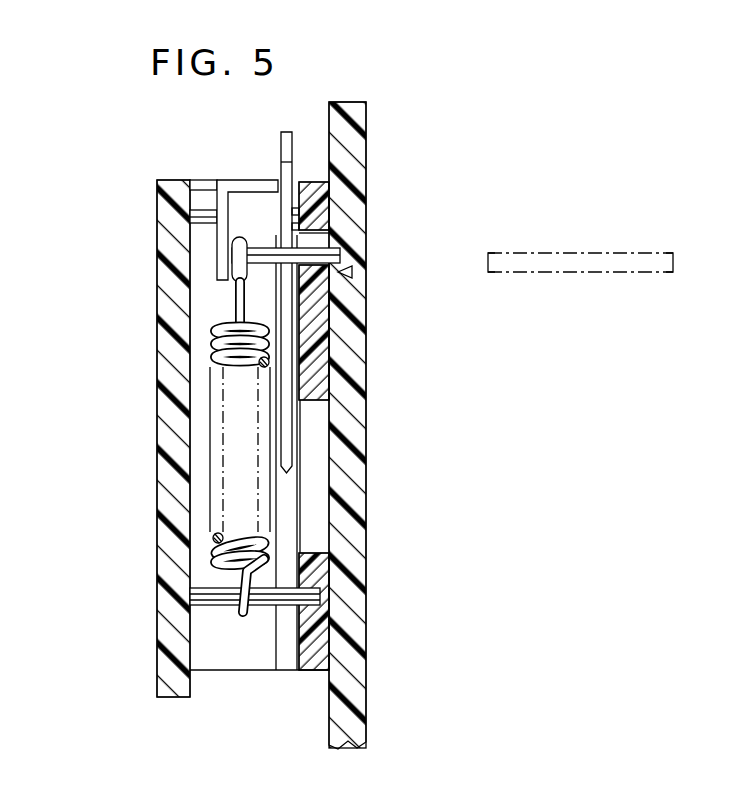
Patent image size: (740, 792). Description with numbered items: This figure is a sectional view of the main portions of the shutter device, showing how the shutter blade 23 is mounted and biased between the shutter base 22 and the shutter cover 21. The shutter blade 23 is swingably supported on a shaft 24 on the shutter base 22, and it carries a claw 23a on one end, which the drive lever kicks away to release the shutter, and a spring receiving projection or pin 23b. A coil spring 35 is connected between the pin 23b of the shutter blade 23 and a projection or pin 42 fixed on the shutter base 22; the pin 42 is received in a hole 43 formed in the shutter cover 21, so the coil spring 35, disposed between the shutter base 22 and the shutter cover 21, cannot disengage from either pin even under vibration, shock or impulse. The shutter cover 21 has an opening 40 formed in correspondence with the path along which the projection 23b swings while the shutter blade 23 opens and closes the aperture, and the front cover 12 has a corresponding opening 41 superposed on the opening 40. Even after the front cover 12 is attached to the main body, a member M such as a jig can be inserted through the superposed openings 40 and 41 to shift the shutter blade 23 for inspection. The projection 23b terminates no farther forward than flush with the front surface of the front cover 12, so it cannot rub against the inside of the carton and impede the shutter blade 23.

The front cover 12 is at (390, 160).
The shutter cover 21 is at (268, 384).
The shutter base 22 is at (138, 444).
The shutter blade 23 is at (193, 253).
The claw 23a is at (280, 137).
The receiving projection 23b is at (340, 256).
The shaft 24 is at (205, 216).
The coil spring 35 is at (217, 553).
The opening 40 is at (330, 277).
The opening 41 is at (348, 273).
The pin 42 is at (220, 607).
The hole 43 is at (330, 597).
The member M is at (548, 253).